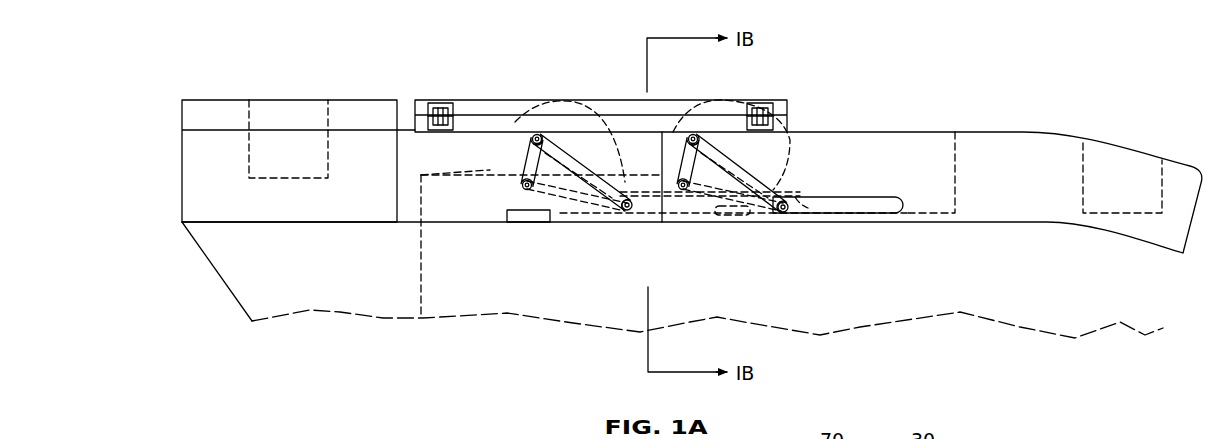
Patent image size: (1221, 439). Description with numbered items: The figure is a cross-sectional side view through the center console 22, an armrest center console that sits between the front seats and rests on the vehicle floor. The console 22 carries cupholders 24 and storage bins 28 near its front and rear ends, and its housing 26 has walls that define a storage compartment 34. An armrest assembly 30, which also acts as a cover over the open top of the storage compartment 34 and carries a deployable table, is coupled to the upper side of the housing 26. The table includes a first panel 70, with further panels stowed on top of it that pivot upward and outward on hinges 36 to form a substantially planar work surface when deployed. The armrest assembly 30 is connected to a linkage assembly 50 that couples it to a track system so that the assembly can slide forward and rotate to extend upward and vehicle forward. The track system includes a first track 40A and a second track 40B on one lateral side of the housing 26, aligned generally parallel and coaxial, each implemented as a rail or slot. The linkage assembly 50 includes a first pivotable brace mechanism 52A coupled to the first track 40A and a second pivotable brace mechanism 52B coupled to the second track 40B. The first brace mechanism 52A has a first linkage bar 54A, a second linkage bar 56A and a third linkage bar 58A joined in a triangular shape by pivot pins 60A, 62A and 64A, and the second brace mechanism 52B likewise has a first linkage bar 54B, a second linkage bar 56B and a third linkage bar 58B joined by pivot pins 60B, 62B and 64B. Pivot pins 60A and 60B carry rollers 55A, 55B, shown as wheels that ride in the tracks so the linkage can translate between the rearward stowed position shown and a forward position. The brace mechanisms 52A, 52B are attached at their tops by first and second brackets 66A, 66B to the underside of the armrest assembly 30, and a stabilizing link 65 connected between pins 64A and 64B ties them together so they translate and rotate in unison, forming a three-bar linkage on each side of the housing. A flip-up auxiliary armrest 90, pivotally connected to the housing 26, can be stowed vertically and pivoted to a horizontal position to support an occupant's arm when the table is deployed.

The center console 22 is at (193, 165).
The cupholders 24 is at (249, 115).
The housing 26 is at (245, 270).
The storage bins 28 is at (955, 160).
The armrest assembly 30 is at (537, 90).
The storage compartment 34 is at (423, 277).
The hinges 36 is at (415, 100).
The first track 40A is at (734, 216).
The second track 40B is at (882, 215).
The linkage assembly 50 is at (508, 155).
The first pivotable brace mechanism 52A is at (579, 146).
The second pivotable brace mechanism 52B is at (750, 153).
The first linkage bar 54A is at (612, 150).
The first linkage bar 54B is at (795, 180).
The roller 55A is at (657, 198).
The roller 55B is at (820, 213).
The second linkage bar 56A is at (582, 200).
The second linkage bar 56B is at (745, 207).
The third linkage bar 58A is at (438, 101).
The third linkage bar 58B is at (658, 225).
The pivot pin 60A is at (630, 212).
The first pivot pin 60B is at (786, 214).
The pivot pin 62A is at (533, 136).
The pivot pin 62B is at (690, 136).
The pivot pin 64A is at (525, 190).
The pivot pin 64B is at (684, 191).
The stabilizing link 65 is at (603, 215).
The first bracket 66A is at (562, 100).
The second bracket 66B is at (726, 100).
The first panel 70 is at (417, 130).
The second flip-up auxiliary armrest 90 is at (412, 170).